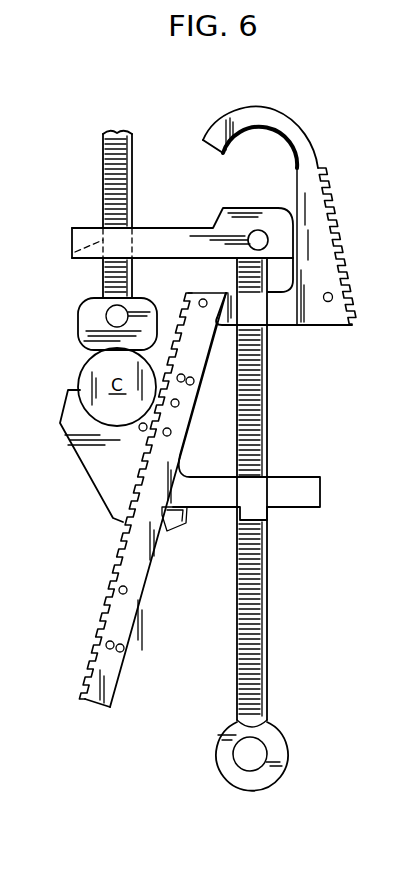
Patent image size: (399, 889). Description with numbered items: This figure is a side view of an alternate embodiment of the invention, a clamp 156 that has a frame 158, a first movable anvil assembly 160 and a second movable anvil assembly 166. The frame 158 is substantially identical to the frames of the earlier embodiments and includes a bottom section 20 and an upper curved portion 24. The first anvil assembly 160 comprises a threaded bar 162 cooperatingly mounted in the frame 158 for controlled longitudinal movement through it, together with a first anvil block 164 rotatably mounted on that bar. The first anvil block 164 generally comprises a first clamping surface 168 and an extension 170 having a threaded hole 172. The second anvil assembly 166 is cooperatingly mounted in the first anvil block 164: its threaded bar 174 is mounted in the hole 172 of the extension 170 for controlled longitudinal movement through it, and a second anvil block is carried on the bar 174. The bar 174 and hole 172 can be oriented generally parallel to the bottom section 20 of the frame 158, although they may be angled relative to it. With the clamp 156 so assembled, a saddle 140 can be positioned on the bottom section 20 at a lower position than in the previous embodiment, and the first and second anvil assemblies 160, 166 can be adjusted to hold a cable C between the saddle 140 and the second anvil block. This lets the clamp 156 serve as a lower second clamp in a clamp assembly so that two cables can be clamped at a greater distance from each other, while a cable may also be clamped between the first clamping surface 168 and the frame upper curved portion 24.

The bottom section 20 is at (140, 603).
The frame upper curved portion 24 is at (276, 110).
The saddle 140 is at (80, 462).
The clamp 156 is at (86, 548).
The frame 158 is at (115, 687).
The first movable anvil assembly 160 is at (268, 652).
The threaded bar 162 is at (268, 570).
The first anvil block 164 is at (180, 228).
The second movable anvil assembly 166 is at (102, 160).
The first clamping surface 168 is at (245, 208).
The extension 170 is at (70, 240).
The threaded hole 172 is at (72, 257).
The threaded bar 174 is at (133, 190).